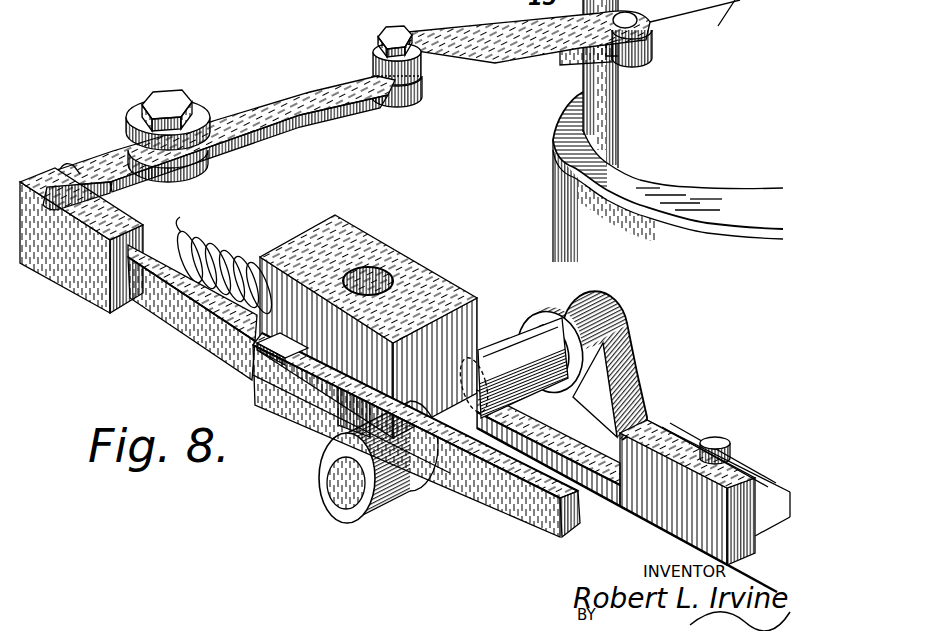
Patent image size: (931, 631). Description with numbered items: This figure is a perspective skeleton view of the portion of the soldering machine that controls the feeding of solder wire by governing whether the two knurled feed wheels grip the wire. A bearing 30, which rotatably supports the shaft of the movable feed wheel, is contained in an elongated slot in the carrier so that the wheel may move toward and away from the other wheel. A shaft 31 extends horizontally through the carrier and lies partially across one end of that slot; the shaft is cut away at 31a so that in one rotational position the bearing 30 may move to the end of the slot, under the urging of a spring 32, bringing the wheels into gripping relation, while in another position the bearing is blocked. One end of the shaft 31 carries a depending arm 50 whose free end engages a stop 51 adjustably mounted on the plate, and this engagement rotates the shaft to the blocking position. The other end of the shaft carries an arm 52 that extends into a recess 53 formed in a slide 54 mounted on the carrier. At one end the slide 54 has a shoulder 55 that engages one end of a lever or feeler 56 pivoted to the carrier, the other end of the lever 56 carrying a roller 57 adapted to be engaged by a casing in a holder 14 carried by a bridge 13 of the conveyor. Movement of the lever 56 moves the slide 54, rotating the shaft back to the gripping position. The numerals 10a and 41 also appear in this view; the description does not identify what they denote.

The pivot hub 10a is at (368, 42).
The bridge 13 is at (529, 31).
The holder 14 is at (573, 223).
The bearing 30 is at (423, 285).
The shaft 31 is at (523, 368).
The cut away portion of shaft 31a is at (484, 366).
The spring 32 is at (231, 243).
The pivot nut 41 is at (393, 28).
The depending arm 50 is at (627, 381).
The stop 51 is at (753, 473).
The arm 52 is at (332, 364).
The recess 53 is at (290, 347).
The slide 54 is at (203, 320).
The shoulder 55 is at (46, 182).
The lever 56 is at (300, 125).
The roller 57 is at (653, 43).